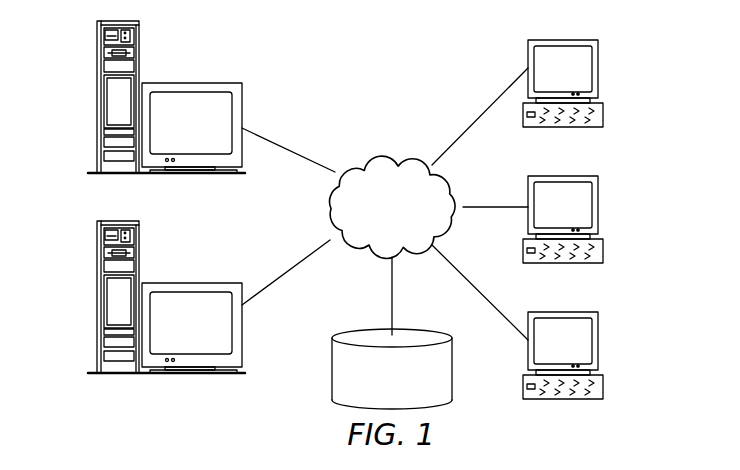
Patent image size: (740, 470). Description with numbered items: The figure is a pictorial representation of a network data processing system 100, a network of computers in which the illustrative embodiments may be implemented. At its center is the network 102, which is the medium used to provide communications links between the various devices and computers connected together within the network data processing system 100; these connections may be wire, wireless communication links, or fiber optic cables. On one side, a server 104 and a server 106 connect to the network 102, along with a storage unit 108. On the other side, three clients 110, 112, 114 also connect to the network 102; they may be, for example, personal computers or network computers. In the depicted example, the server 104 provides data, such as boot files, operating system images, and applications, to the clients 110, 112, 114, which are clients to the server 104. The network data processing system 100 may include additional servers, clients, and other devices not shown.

The network data processing system 100 is at (444, 57).
The network 102 is at (362, 158).
The server 104 is at (97, 100).
The server 106 is at (97, 300).
The storage unit 108 is at (332, 377).
The client 110 is at (598, 70).
The client 112 is at (598, 207).
The client 114 is at (598, 340).